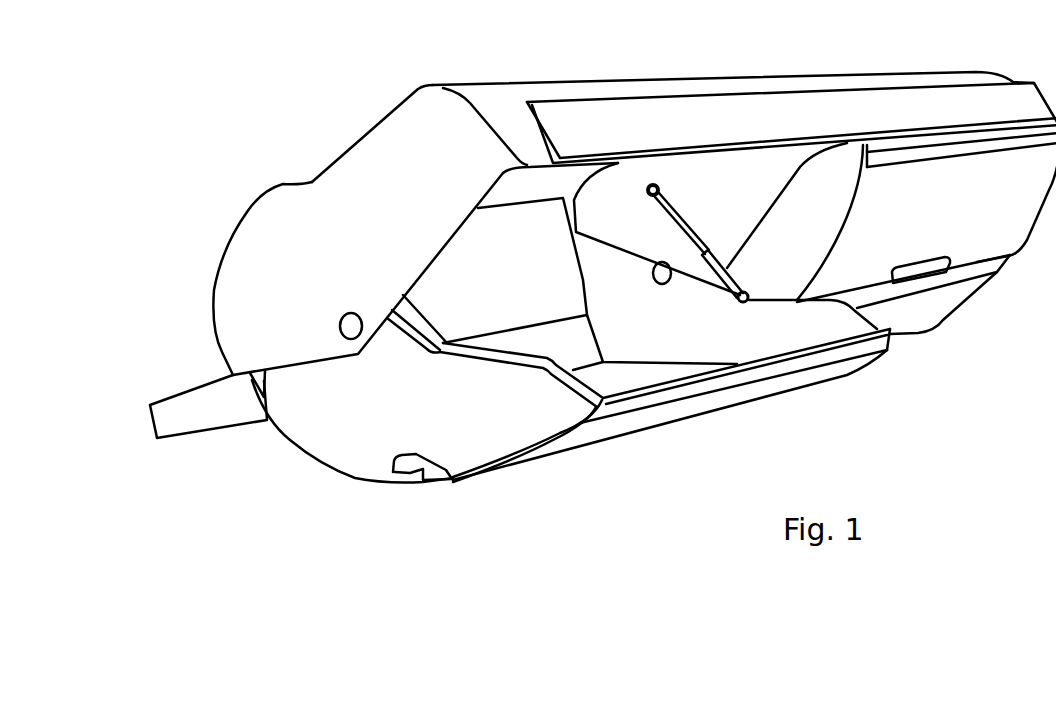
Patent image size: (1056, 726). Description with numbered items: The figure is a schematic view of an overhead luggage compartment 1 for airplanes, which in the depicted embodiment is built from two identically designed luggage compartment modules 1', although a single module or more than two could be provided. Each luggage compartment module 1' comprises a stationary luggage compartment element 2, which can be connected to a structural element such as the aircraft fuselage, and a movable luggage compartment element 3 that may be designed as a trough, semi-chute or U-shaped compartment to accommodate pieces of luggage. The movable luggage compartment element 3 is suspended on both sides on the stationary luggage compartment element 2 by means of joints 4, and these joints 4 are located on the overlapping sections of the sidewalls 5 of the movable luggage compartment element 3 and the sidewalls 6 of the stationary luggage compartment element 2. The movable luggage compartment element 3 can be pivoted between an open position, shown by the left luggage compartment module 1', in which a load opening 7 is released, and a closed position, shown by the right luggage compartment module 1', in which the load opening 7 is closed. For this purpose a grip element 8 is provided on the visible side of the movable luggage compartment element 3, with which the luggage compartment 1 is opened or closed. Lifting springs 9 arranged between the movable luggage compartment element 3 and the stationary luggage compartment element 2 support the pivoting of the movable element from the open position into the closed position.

The overhead luggage compartment 1 is at (628, 195).
The luggage compartment module 1' is at (737, 389).
The stationary luggage compartment element 2 is at (403, 165).
The movable luggage compartment element 3 is at (325, 422).
The joint 4 is at (352, 328).
The sidewall of the movable luggage compartment element 5 is at (358, 400).
The sidewall of the stationary luggage compartment element 6 is at (265, 255).
The load opening 7 is at (627, 370).
The grip element 8 is at (922, 272).
The lifting spring 9 is at (443, 347).